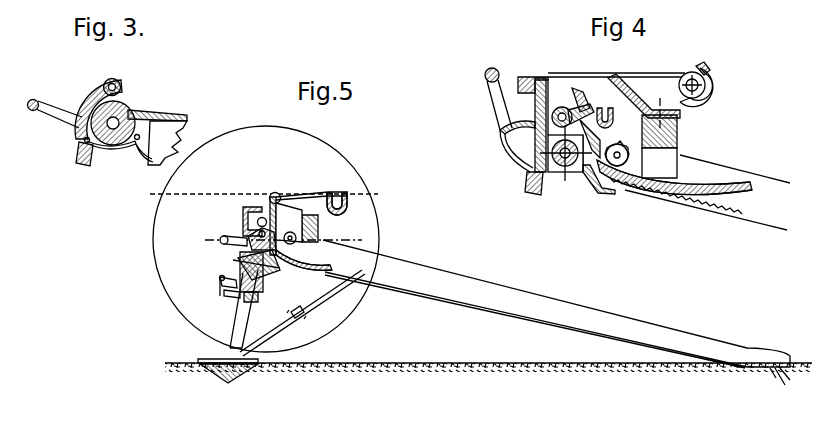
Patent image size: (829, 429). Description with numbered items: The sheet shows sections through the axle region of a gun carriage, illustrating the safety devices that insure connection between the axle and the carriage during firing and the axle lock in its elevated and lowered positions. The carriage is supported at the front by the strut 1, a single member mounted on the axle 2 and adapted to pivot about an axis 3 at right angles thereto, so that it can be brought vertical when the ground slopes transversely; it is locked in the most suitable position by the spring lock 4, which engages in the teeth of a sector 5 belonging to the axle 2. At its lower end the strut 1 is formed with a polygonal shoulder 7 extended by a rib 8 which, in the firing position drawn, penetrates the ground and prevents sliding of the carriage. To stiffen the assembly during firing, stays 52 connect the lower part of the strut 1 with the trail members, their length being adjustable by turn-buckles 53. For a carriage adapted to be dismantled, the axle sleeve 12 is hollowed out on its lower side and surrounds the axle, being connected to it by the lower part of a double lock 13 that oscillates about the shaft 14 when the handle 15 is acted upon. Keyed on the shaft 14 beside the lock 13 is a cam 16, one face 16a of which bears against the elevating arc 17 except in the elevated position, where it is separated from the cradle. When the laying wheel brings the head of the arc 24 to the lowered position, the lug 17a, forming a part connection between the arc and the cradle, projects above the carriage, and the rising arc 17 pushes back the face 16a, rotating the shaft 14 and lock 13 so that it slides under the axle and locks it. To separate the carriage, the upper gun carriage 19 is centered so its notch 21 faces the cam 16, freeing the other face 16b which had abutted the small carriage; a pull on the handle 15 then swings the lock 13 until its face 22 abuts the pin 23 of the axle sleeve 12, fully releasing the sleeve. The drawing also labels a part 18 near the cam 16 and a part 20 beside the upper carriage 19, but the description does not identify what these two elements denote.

In FIG. 5, the strut 1 is at (244, 309).
In FIG. 3, the axle 2 is at (135, 114).
In FIG. 5, the axle 2 is at (250, 233).
In FIG. 5, the axis 3 is at (238, 262).
In FIG. 5, the spring lock 4 is at (222, 291).
In FIG. 5, the sector 5 is at (265, 287).
In FIG. 5, the shoulder 7 is at (200, 359).
In FIG. 5, the rib 8 is at (215, 372).
In FIG. 4, the axle sleeve 12 is at (540, 152).
In FIG. 3, the double lock 13 is at (97, 88).
In FIG. 3, the shaft 14 is at (121, 84).
In FIG. 3, the handle 15 is at (34, 111).
In FIG. 4, the handle 15 is at (484, 80).
In FIG. 4, the cam 16 is at (572, 106).
In FIG. 4, the face of the cam 16a is at (622, 97).
In FIG. 4, the face of the cam 16b is at (566, 118).
In FIG. 5, the elevating arc 17 is at (306, 218).
In FIG. 4, the elevating arc 17 is at (630, 173).
In FIG. 4, the lug 17a is at (578, 170).
In FIG. 4, the catch 18 is at (576, 88).
In FIG. 4, the upper gun carriage 19 is at (692, 78).
In FIG. 4, the hook 20 is at (718, 74).
In FIG. 4, the notch 21 is at (546, 73).
In FIG. 3, the face of the lock 22 is at (128, 146).
In FIG. 3, the pin 23 is at (80, 149).
In FIG. 4, the pin 23 is at (528, 174).
In FIG. 5, the head of the arc 24 is at (277, 195).
In FIG. 5, the stays 52 is at (310, 310).
In FIG. 5, the turn-buckles 53 is at (293, 320).